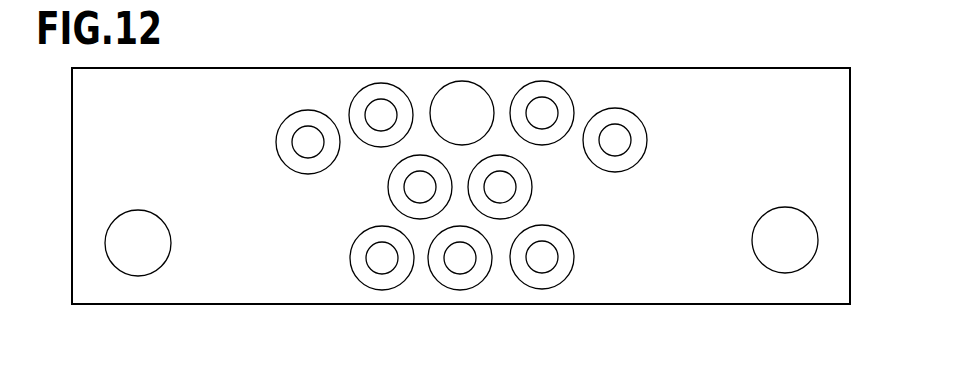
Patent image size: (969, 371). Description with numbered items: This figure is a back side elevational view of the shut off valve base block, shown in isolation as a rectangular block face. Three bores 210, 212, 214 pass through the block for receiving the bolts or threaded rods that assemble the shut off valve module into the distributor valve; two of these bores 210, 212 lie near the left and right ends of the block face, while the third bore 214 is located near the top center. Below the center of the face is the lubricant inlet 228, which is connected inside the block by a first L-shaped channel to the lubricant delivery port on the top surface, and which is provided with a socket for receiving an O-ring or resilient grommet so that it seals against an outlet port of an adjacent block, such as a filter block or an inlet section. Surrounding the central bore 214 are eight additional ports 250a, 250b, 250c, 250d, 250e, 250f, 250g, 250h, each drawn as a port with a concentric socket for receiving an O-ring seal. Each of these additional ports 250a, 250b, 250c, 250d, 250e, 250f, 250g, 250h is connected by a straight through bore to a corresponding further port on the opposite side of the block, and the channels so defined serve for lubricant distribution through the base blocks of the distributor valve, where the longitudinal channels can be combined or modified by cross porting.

The bore 210 is at (160, 218).
The bore 212 is at (760, 222).
The bore 214 is at (462, 90).
The lubricant inlet 228 is at (458, 266).
The additional port 250a is at (548, 112).
The additional port 250b is at (622, 140).
The additional port 250c is at (550, 258).
The additional port 250d is at (508, 188).
The additional port 250e is at (375, 262).
The additional port 250f is at (412, 185).
The additional port 250g is at (305, 134).
The additional port 250h is at (381, 90).